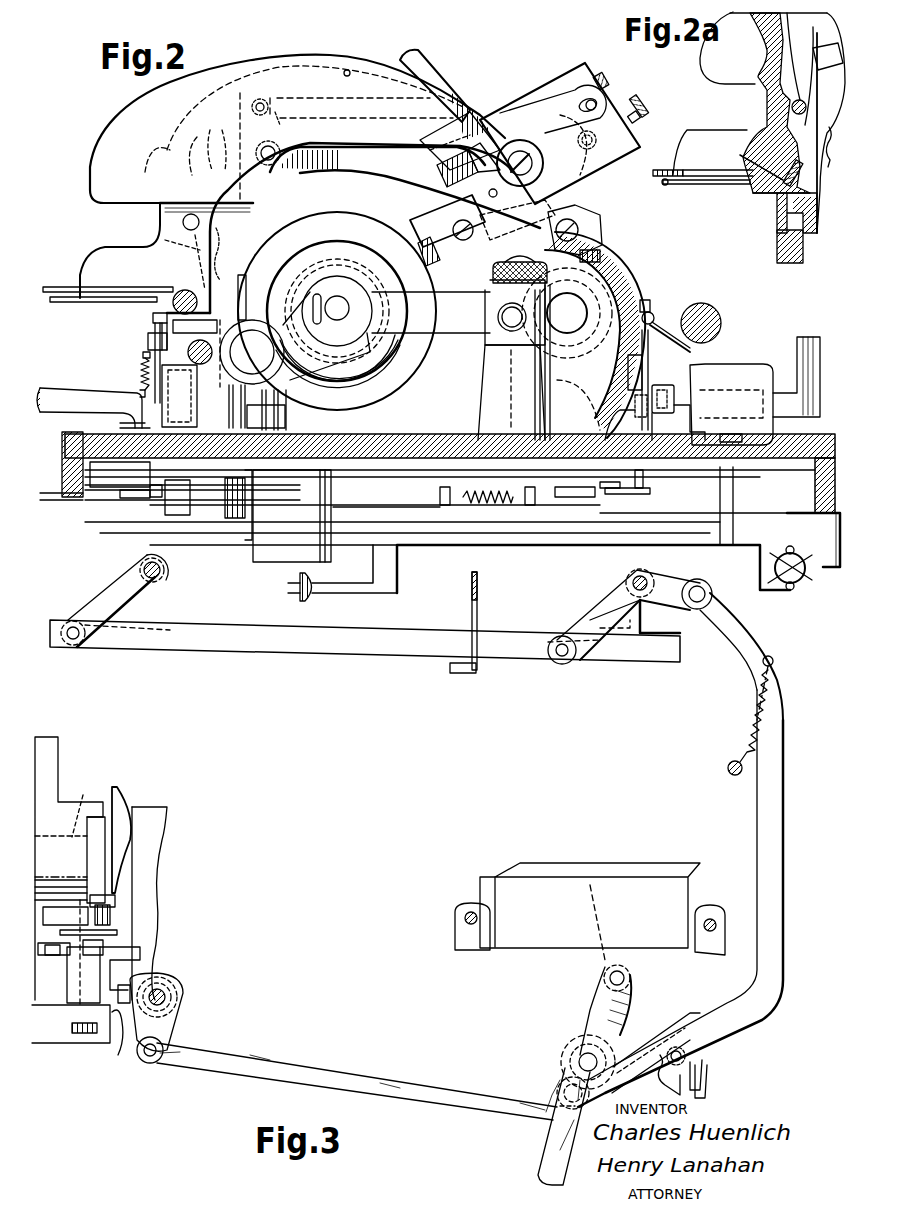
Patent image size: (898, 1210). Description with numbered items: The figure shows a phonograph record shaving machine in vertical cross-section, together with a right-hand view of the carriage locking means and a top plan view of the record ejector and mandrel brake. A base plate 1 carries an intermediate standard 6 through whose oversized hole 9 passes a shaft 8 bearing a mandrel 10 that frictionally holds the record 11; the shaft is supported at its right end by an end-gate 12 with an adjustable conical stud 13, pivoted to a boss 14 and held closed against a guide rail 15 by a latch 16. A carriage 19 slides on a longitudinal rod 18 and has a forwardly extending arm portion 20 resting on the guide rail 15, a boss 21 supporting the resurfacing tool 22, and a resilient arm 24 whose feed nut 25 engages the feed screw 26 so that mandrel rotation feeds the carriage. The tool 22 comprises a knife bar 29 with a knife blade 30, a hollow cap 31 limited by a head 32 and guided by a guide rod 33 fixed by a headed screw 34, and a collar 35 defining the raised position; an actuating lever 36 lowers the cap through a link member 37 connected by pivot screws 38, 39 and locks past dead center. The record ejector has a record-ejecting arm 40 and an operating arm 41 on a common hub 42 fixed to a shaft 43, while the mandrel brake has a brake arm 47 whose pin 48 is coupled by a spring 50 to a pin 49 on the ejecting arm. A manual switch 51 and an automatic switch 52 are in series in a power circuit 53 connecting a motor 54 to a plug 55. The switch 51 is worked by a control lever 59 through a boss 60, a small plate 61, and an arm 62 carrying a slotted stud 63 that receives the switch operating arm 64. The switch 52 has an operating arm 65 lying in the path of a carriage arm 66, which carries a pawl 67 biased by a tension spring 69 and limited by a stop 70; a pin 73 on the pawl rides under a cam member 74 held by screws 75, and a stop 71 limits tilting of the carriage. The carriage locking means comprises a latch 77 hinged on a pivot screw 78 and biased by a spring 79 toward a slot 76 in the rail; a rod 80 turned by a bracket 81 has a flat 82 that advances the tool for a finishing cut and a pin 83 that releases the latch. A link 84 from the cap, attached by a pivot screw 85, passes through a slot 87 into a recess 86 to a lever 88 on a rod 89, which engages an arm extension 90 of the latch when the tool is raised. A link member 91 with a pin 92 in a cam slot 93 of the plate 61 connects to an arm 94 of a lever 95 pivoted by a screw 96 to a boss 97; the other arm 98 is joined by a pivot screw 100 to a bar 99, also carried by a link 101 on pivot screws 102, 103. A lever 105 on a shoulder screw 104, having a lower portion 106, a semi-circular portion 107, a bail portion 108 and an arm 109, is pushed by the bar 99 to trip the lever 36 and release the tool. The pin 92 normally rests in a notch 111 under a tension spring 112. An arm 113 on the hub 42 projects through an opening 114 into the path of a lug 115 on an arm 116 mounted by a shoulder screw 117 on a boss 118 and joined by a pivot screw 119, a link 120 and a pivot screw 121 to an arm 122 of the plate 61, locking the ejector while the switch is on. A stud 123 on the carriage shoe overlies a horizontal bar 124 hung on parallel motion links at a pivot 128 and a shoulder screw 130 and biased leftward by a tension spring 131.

In FIG. 2, the base plate 1 is at (70, 433).
In FIG. 3, the base plate 1 is at (158, 818).
In FIG. 3, the intermediate standard 6 is at (55, 835).
In FIG. 3, the shaft 8 is at (102, 855).
In FIG. 3, the oversized hole 9 is at (82, 809).
In FIG. 2, the mandrel 10 is at (385, 355).
In FIG. 3, the mandrel 10 is at (122, 805).
In FIG. 2, the record 11 is at (400, 372).
In FIG. 2, the end-gate 12 is at (458, 312).
In FIG. 2, the adjustable conical stud 13 is at (337, 311).
In FIG. 2, the boss 14 is at (485, 395).
In FIG. 2, the guide rail 15 is at (153, 320).
In FIG. 3, the guide rail 15 is at (55, 1015).
In FIG. 2, the latch 16 is at (196, 353).
In FIG. 2, the longitudinal rod 18 is at (567, 354).
In FIG. 2, the carriage 19 is at (602, 218).
In FIG. 2, the arm portion 20 is at (155, 118).
In FIG. 2A, the arm portion 20 is at (750, 93).
In FIG. 2, the boss 21 is at (585, 168).
In FIG. 2, the resurfacing tool 22 is at (419, 231).
In FIG. 2, the resilient arm 24 is at (700, 357).
In FIG. 2, the feed nut 25 is at (700, 342).
In FIG. 2, the feed screw 26 is at (721, 322).
In FIG. 2, the knife bar 29 is at (430, 222).
In FIG. 2, the knife blade 30 is at (420, 252).
In FIG. 2, the hollow cap 31 is at (575, 78).
In FIG. 2, the head 32 is at (640, 108).
In FIG. 2, the guide rod 33 is at (440, 163).
In FIG. 2, the headed screw 34 is at (606, 78).
In FIG. 2, the collar 35 is at (490, 255).
In FIG. 2, the actuating lever 36 is at (445, 80).
In FIG. 2, the link member 37 is at (560, 97).
In FIG. 2, the pivot screw 38 is at (445, 180).
In FIG. 2, the pivot screw 39 is at (598, 102).
In FIG. 2, the record-ejecting arm 40 is at (242, 275).
In FIG. 3, the operating arm 41 is at (103, 945).
In FIG. 2, the common hub 42 is at (270, 400).
In FIG. 3, the common hub 42 is at (72, 988).
In FIG. 2, the shaft 43 is at (305, 400).
In FIG. 3, the shaft 43 is at (80, 1033).
In FIG. 3, the brake arm 47 is at (120, 900).
In FIG. 3, the forwardly extending pin 48 is at (65, 915).
In FIG. 3, the rearwardly extending pin 49 is at (60, 955).
In FIG. 3, the spring 50 is at (117, 931).
In FIG. 2, the manually operable switch 51 is at (292, 516).
In FIG. 3, the manually operable switch 51 is at (590, 905).
In FIG. 2, the automatic switch 52 is at (750, 370).
In FIG. 2, the power circuit 53 is at (540, 545).
In FIG. 2, the motor 54 is at (805, 575).
In FIG. 2, the plug 55 is at (320, 598).
In FIG. 2, the control lever 59 is at (89, 408).
In FIG. 3, the control lever 59 is at (548, 1158).
In FIG. 2, the boss 60 is at (125, 461).
In FIG. 3, the boss 60 is at (590, 1040).
In FIG. 2, the small plate 61 is at (122, 490).
In FIG. 3, the small plate 61 is at (625, 1068).
In FIG. 2, the rearwardly extending arm 62 is at (205, 515).
In FIG. 3, the rearwardly extending arm 62 is at (600, 987).
In FIG. 2, the slotted and pivoted stud 63 is at (230, 520).
In FIG. 3, the slotted and pivoted stud 63 is at (604, 975).
In FIG. 3, the operating arm 64 is at (605, 965).
In FIG. 2, the operating arm 65 is at (680, 388).
In FIG. 2, the arm 66 is at (612, 430).
In FIG. 2, the pawl 67 is at (650, 375).
In FIG. 2, the tension spring 69 is at (650, 308).
In FIG. 2, the lug or stop 70 is at (628, 375).
In FIG. 2, the stop 71 is at (578, 405).
In FIG. 2, the laterally extending pin 73 is at (675, 400).
In FIG. 2, the cam member 74 is at (680, 415).
In FIG. 2, the screws 75 is at (728, 433).
In FIG. 2A, the slot 76 is at (778, 225).
In FIG. 2, the latch 77 is at (175, 235).
In FIG. 2A, the latch 77 is at (818, 173).
In FIG. 2, the pivot screw 78 is at (185, 215).
In FIG. 2A, the pivot screw 78 is at (792, 107).
In FIG. 2, the spring 79 is at (224, 255).
In FIG. 2A, the spring 79 is at (831, 105).
In FIG. 2, the rod 80 is at (165, 295).
In FIG. 2A, the rod 80 is at (786, 205).
In FIG. 2, the bracket 81 is at (95, 290).
In FIG. 2A, the bracket 81 is at (712, 184).
In FIG. 2, the longitudinal flat 82 is at (178, 288).
In FIG. 2A, the longitudinal flat 82 is at (752, 163).
In FIG. 2, the pin 83 is at (195, 250).
In FIG. 2A, the pin 83 is at (792, 160).
In FIG. 2, the link 84 is at (493, 105).
In FIG. 2, the pivot screw 85 is at (595, 143).
In FIG. 2, the recess 86 is at (350, 70).
In FIG. 2, the slot 87 is at (400, 83).
In FIG. 2, the lever 88 is at (278, 148).
In FIG. 2, the rod 89 is at (405, 187).
In FIG. 2, the arm extension 90 is at (197, 150).
In FIG. 2A, the arm extension 90 is at (812, 30).
In FIG. 2, the link member 91 is at (402, 478).
In FIG. 3, the link member 91 is at (760, 814).
In FIG. 2, the pin 92 is at (170, 497).
In FIG. 3, the pin 92 is at (678, 1050).
In FIG. 3, the cam slot 93 is at (702, 1078).
In FIG. 2, the arm 94 is at (600, 490).
In FIG. 2, the lever 95 is at (640, 494).
In FIG. 2, the pivot screw 96 is at (648, 578).
In FIG. 2, the boss 97 is at (641, 480).
In FIG. 2, the other arm 98 is at (590, 612).
In FIG. 2, the bar 99 is at (560, 495).
In FIG. 2, the pivot screw 100 is at (560, 664).
In FIG. 2, the link 101 is at (130, 600).
In FIG. 2, the pivot screw 102 is at (160, 580).
In FIG. 2, the pivot screw 103 is at (73, 647).
In FIG. 2, the shoulder screw 104 is at (600, 240).
In FIG. 2, the lever 105 is at (640, 254).
In FIG. 2, the lower portion 106 is at (527, 505).
In FIG. 2, the central semi-circular portion 107 is at (635, 270).
In FIG. 2, the bail portion 108 is at (530, 245).
In FIG. 2, the forwardly extending arm 109 is at (531, 230).
In FIG. 3, the notch 111 is at (707, 1093).
In FIG. 2, the tension spring 112 is at (467, 500).
In FIG. 3, the tension spring 112 is at (742, 730).
In FIG. 3, the arm 113 is at (130, 985).
In FIG. 3, the opening 114 is at (140, 952).
In FIG. 3, the lug 115 is at (120, 1045).
In FIG. 3, the arm 116 is at (165, 1030).
In FIG. 3, the shoulder screw 117 is at (172, 1003).
In FIG. 3, the boss 118 is at (178, 985).
In FIG. 3, the pivot screw 119 is at (160, 1062).
In FIG. 3, the link 120 is at (428, 1088).
In FIG. 3, the pivot screw 121 is at (560, 1093).
In FIG. 3, the arm 122 is at (560, 1118).
In FIG. 2, the stud 123 is at (153, 300).
In FIG. 2, the horizontal bar 124 is at (148, 340).
In FIG. 2, the pivot 128 is at (143, 354).
In FIG. 2, the shoulder screw 130 is at (135, 402).
In FIG. 2, the tension spring 131 is at (142, 378).